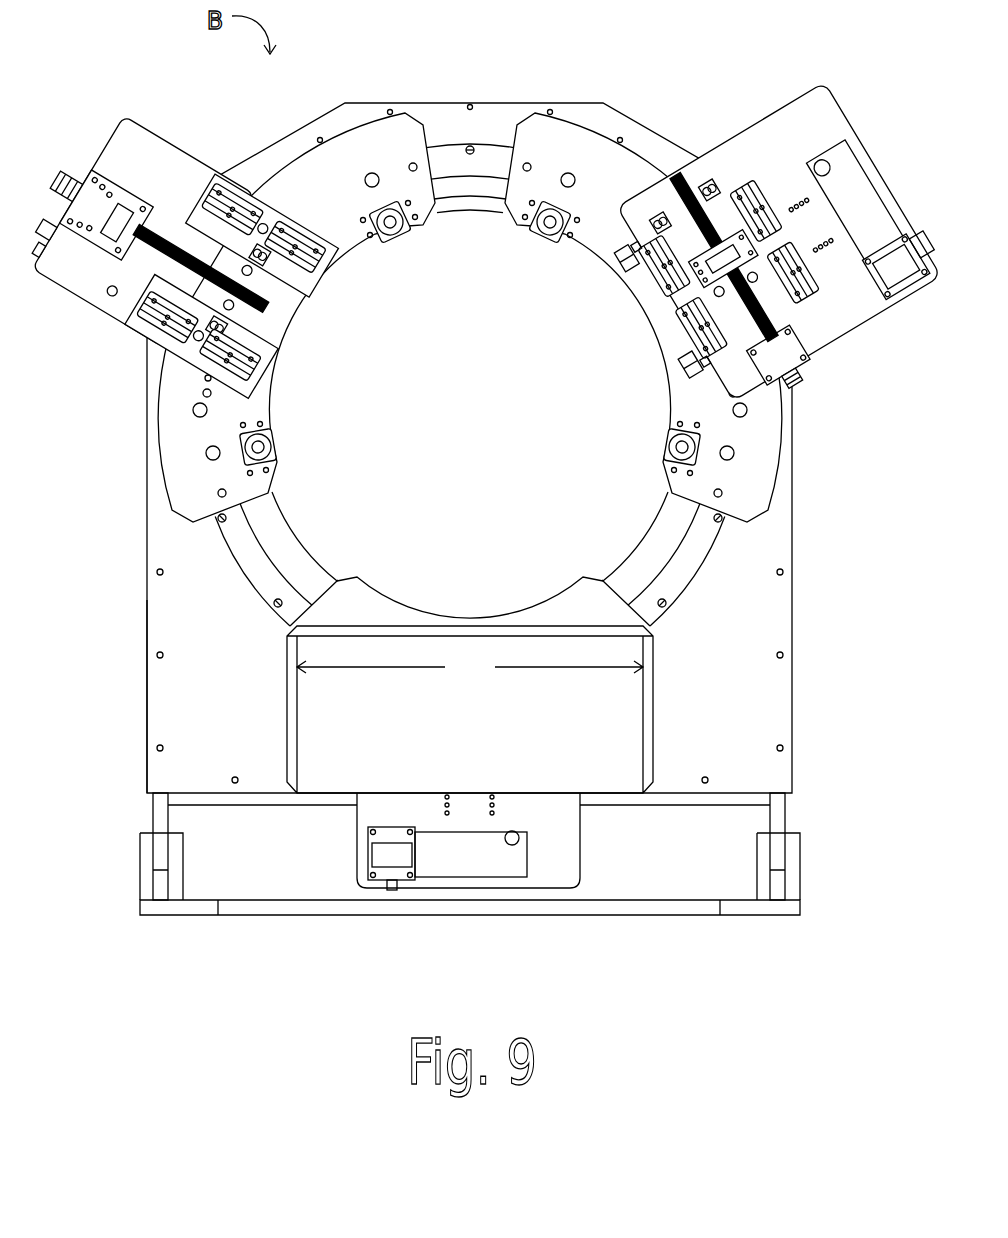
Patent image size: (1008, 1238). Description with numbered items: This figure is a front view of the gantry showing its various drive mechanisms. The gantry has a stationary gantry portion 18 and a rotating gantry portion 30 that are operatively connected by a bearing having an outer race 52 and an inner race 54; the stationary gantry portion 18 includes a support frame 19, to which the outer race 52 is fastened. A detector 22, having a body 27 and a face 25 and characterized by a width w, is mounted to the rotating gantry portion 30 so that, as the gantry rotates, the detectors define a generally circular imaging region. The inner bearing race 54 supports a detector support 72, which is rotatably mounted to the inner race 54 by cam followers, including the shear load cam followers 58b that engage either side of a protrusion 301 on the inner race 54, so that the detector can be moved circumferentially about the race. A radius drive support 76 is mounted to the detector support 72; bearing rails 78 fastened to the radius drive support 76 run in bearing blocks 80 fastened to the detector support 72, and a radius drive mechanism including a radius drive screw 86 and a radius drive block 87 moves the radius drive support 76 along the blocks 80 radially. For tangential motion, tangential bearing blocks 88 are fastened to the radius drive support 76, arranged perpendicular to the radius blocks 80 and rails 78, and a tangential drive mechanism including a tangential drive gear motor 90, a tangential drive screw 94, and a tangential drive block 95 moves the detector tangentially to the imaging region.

The stationary gantry portion 18 is at (134, 687).
The support frame 19 is at (138, 820).
The detector 22 is at (699, 638).
The detector face 25 is at (626, 606).
The detector body 27 is at (667, 726).
The rotating gantry portion 30 is at (316, 520).
The outer bearing race 52 is at (248, 575).
The inner bearing race 54 is at (308, 562).
The shear load cam follower 58b is at (393, 226).
The detector support 72 is at (178, 160).
The radius drive support 76 is at (806, 127).
The bearing rails 78 is at (645, 258).
The bearing blocks 80 is at (272, 238).
The radius drive screw 86 is at (180, 262).
The radius drive block 87 is at (122, 246).
The tangential bearing blocks 88 is at (676, 310).
The tangential drive gear motor 90 is at (858, 210).
The tangential drive screw 94 is at (775, 332).
The tangential drive block 95 is at (722, 252).
The protrusion 301 is at (470, 216).